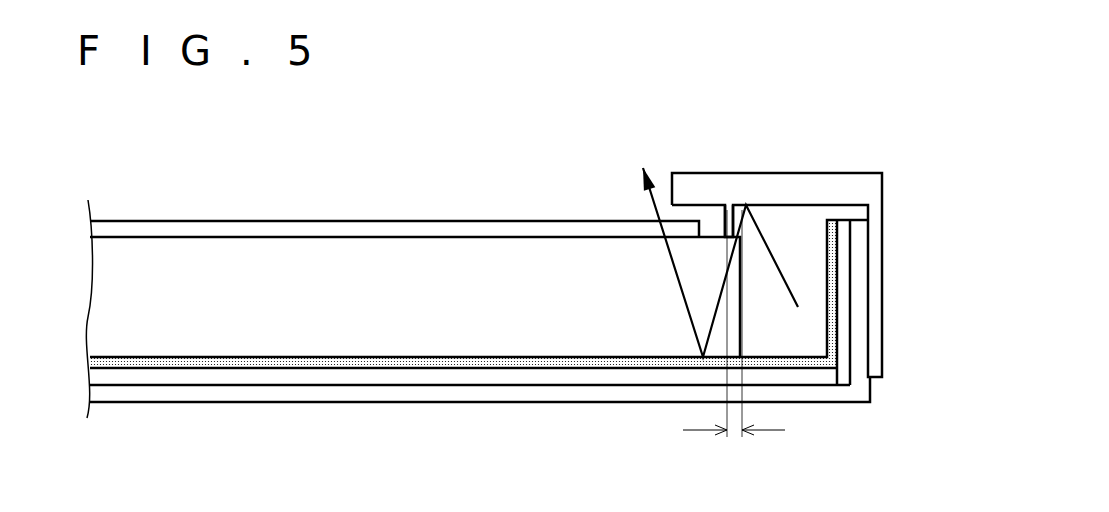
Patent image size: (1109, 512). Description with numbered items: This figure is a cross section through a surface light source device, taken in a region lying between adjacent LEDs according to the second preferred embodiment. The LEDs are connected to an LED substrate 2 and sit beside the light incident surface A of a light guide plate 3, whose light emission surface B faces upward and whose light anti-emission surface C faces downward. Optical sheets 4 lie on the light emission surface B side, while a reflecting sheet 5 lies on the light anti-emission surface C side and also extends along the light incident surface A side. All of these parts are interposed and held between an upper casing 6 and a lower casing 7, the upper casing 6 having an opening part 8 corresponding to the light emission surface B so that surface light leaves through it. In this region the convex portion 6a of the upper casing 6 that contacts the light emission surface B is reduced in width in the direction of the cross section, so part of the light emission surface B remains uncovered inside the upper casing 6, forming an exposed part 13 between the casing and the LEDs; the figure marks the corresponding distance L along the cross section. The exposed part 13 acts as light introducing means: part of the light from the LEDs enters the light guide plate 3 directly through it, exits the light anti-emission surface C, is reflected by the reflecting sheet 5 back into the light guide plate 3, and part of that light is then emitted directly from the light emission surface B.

The LED substrate 2 is at (845, 379).
The light guide plate 3 is at (512, 258).
The optical sheets 4 is at (340, 228).
The reflecting sheet 5 is at (291, 362).
The upper casing 6 is at (795, 192).
The convex portion 6a is at (722, 222).
The lower casing 7 is at (460, 395).
The opening part 8 is at (672, 186).
The exposed part 13 is at (731, 207).
The light incident surface A is at (742, 283).
The light emission surface B is at (433, 237).
The light anti-emission surface C is at (383, 358).
The distance L is at (744, 439).